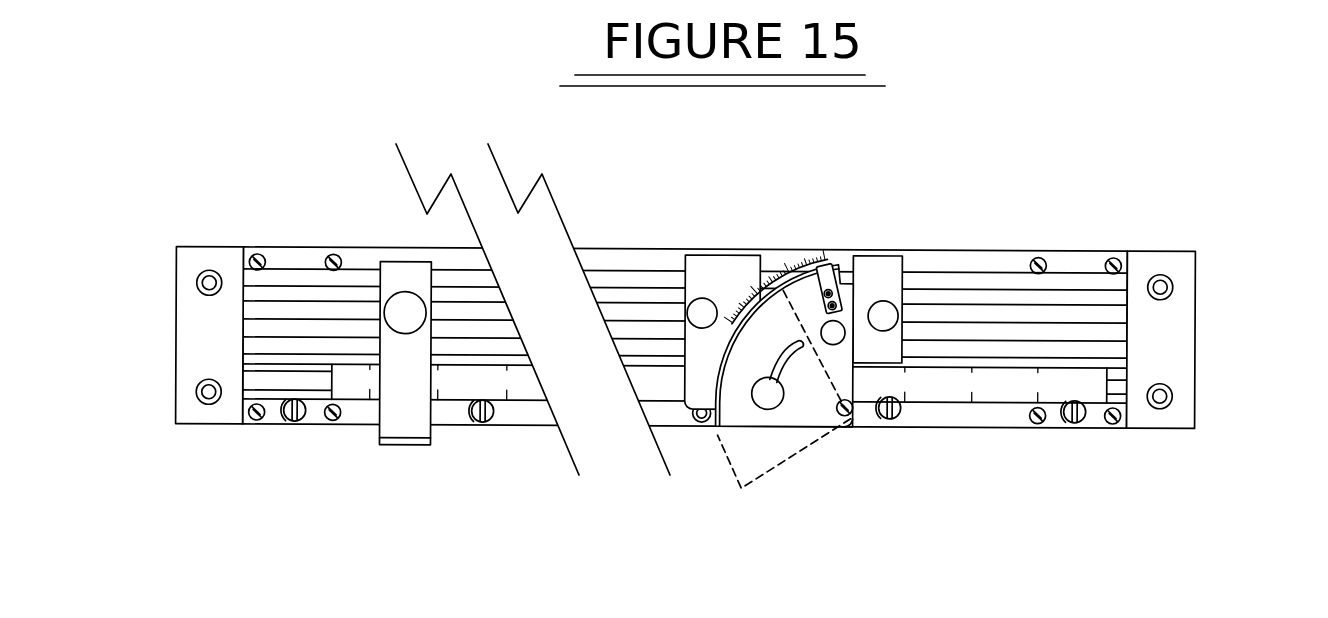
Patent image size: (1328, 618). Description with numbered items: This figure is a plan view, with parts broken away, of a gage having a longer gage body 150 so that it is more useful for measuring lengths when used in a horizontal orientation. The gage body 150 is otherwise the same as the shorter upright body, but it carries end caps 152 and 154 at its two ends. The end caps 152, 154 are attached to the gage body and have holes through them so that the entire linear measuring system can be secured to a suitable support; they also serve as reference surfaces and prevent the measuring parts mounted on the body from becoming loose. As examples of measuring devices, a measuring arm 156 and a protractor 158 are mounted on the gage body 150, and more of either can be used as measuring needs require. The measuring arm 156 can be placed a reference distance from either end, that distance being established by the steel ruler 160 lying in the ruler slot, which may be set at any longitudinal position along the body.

The gage body 150 is at (938, 252).
The end cap 152 is at (205, 425).
The end cap 154 is at (1197, 343).
The measuring arm 156 is at (410, 447).
The protractor 158 is at (732, 252).
The steel ruler 160 is at (1002, 392).